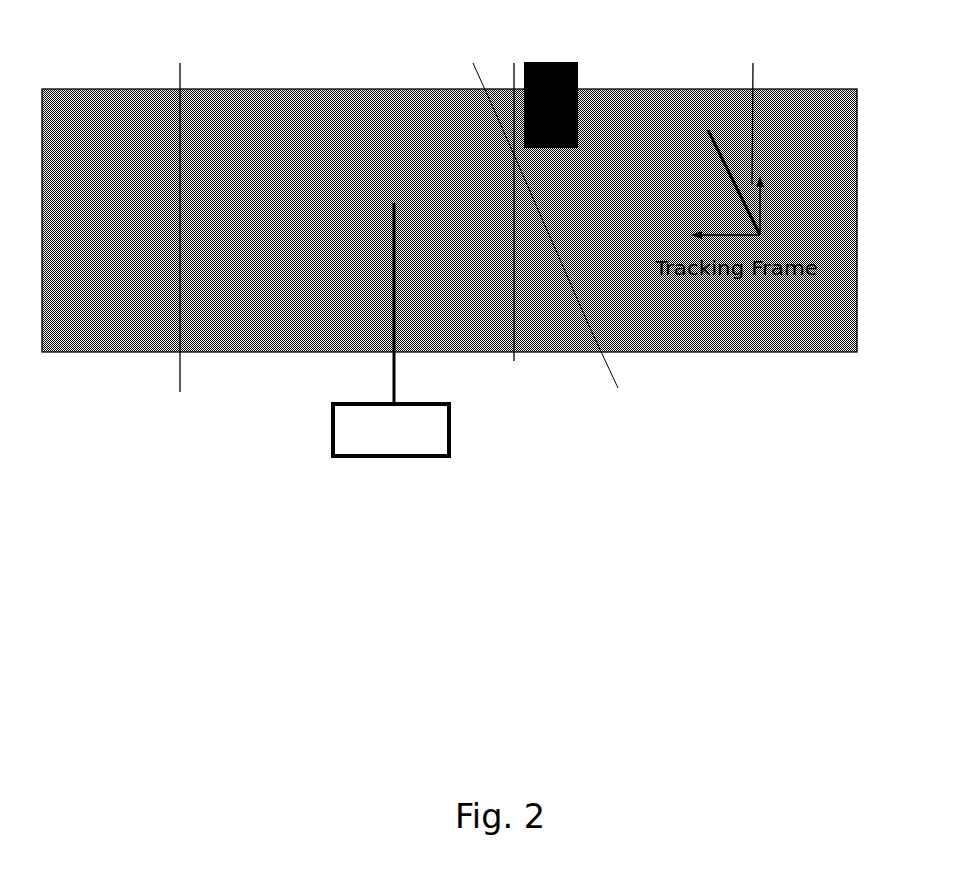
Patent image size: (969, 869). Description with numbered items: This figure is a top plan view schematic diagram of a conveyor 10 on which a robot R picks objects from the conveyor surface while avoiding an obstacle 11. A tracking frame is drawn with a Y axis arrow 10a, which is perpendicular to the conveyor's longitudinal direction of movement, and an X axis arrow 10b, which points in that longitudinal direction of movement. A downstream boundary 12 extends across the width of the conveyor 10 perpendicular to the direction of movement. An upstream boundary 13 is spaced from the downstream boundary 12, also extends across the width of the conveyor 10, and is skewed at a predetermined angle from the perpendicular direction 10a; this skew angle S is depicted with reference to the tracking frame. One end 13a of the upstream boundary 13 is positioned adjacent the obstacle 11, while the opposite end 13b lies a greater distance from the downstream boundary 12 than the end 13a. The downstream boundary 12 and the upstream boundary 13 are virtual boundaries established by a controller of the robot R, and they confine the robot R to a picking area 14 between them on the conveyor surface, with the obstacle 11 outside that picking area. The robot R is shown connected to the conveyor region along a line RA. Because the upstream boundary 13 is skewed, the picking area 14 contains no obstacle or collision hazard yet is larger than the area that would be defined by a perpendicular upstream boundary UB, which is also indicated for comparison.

The conveyor 10 is at (443, 184).
The picking area 14 is at (318, 133).
The downstream boundary 12 is at (178, 372).
The upstream boundary UB is at (514, 258).
The upstream boundary 13 is at (722, 165).
The end of the upstream boundary 13a is at (477, 73).
The opposite end of the upstream boundary 13b is at (620, 385).
The obstacle 11 is at (572, 70).
The skew angle S is at (750, 109).
The Y axis arrow of the tracking frame 10a is at (760, 222).
The X axis arrow of the tracking frame 10b is at (728, 235).
The robot axis RA is at (392, 245).
The robot R is at (350, 446).